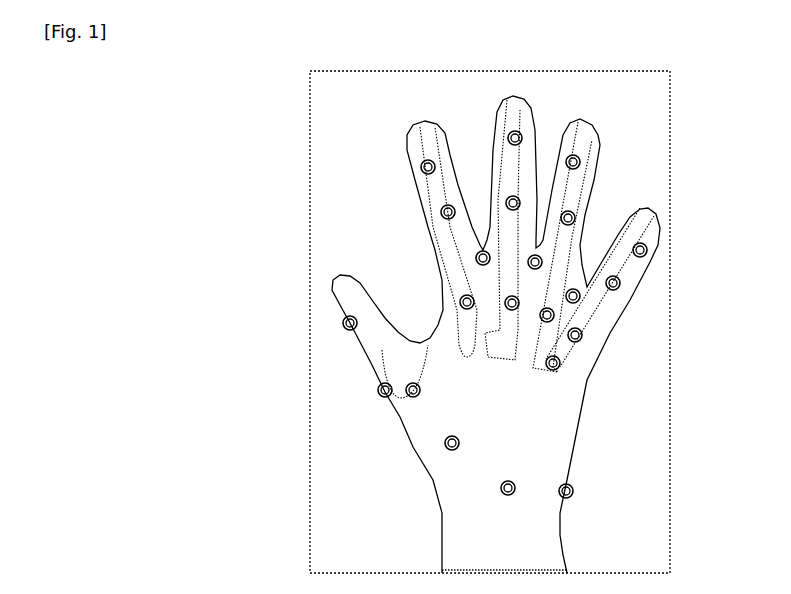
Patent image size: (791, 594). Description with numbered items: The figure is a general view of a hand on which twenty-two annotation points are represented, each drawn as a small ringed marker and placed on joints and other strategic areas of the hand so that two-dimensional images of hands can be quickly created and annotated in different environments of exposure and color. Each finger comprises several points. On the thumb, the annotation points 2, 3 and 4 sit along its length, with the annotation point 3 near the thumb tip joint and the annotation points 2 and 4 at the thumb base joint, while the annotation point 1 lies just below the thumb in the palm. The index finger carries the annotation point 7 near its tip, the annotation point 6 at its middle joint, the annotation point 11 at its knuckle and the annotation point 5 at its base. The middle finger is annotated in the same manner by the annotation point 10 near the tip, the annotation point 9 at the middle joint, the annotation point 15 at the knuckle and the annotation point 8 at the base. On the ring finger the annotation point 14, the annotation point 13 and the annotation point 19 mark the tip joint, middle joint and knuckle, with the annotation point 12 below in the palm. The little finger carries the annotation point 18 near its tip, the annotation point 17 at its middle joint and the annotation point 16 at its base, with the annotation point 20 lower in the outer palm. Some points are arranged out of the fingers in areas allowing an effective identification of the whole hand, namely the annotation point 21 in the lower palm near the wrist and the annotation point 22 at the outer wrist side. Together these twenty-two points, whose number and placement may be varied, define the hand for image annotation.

The annotation point 1 is at (445, 445).
The annotation point 2 is at (375, 402).
The annotation point 3 is at (341, 339).
The annotation point 4 is at (422, 393).
The annotation point 5 is at (460, 304).
The annotation point 6 is at (441, 213).
The annotation point 7 is at (416, 160).
The annotation point 8 is at (504, 310).
The annotation point 9 is at (506, 213).
The annotation point 10 is at (490, 138).
The annotation point 11 is at (470, 268).
The annotation point 12 is at (535, 330).
The annotation point 13 is at (580, 198).
The annotation point 14 is at (598, 143).
The annotation point 15 is at (523, 269).
The annotation point 16 is at (593, 335).
The annotation point 17 is at (619, 287).
The annotation point 18 is at (645, 256).
The annotation point 19 is at (560, 262).
The annotation point 20 is at (554, 371).
The annotation point 21 is at (509, 505).
The annotation point 22 is at (578, 506).